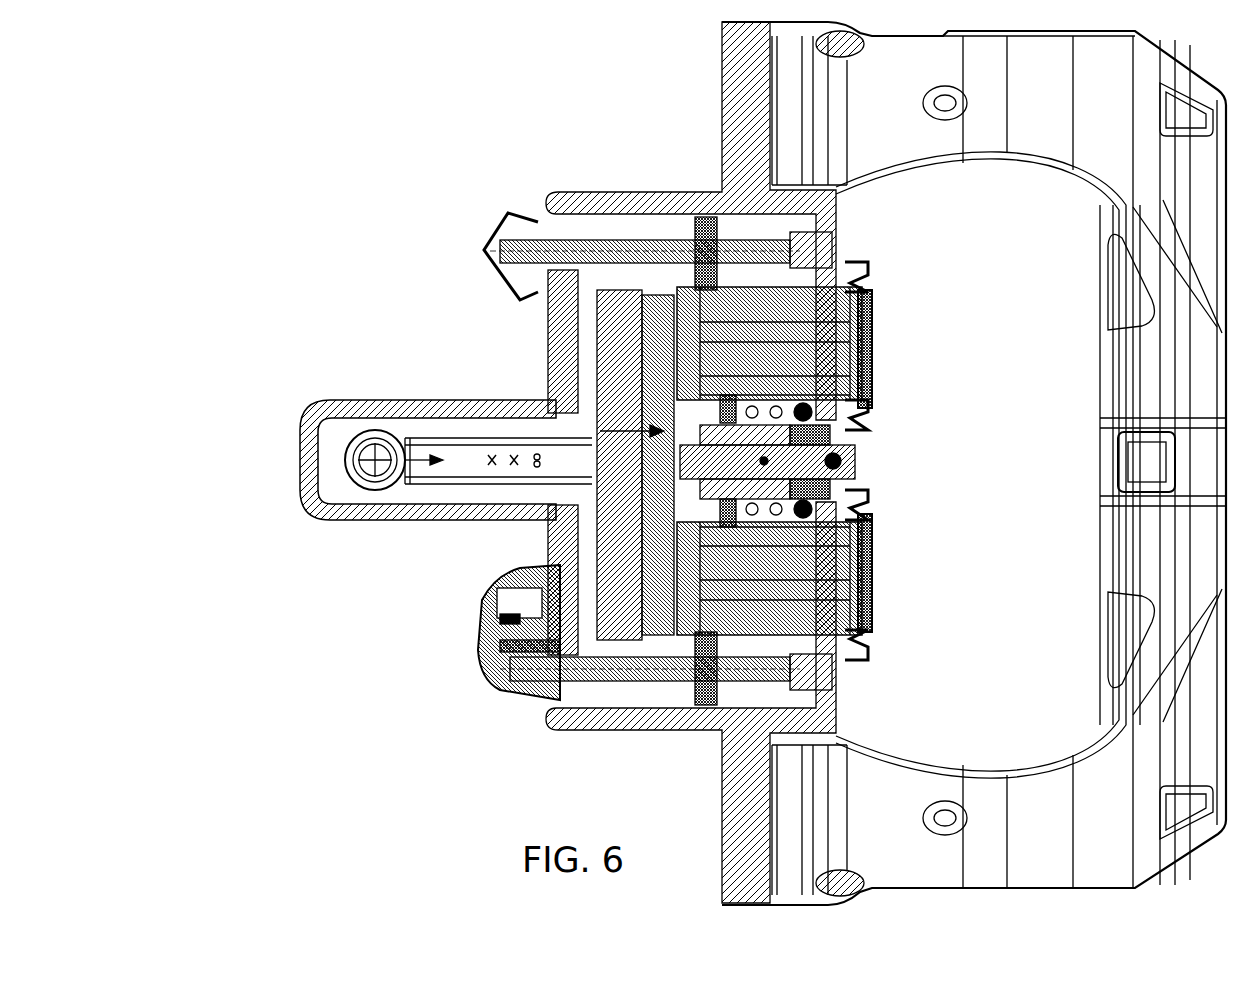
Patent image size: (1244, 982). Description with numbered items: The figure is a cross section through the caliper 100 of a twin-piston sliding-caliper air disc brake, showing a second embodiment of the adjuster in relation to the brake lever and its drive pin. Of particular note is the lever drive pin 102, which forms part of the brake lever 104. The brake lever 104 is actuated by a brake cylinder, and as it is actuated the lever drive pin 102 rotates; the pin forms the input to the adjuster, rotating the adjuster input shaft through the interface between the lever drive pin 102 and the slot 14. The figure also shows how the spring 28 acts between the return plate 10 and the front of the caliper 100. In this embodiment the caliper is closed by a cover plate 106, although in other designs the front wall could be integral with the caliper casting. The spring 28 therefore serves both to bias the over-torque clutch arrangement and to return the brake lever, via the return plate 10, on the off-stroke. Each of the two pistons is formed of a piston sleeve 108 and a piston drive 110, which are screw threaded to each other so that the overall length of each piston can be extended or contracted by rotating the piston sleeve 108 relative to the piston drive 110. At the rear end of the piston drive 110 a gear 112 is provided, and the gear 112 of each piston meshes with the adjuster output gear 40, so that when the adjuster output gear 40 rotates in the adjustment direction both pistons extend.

The caliper 100 is at (372, 723).
The return plate 10 is at (838, 255).
The slot 14 is at (848, 450).
The spring 28 is at (870, 403).
The adjuster output gear 40 is at (600, 520).
The lever drive pin 102 is at (553, 396).
The brake lever 104 is at (348, 432).
The cover plate 106 is at (848, 469).
The piston sleeve 108 is at (872, 626).
The piston drive 110 is at (872, 568).
The gear 112 is at (612, 532).